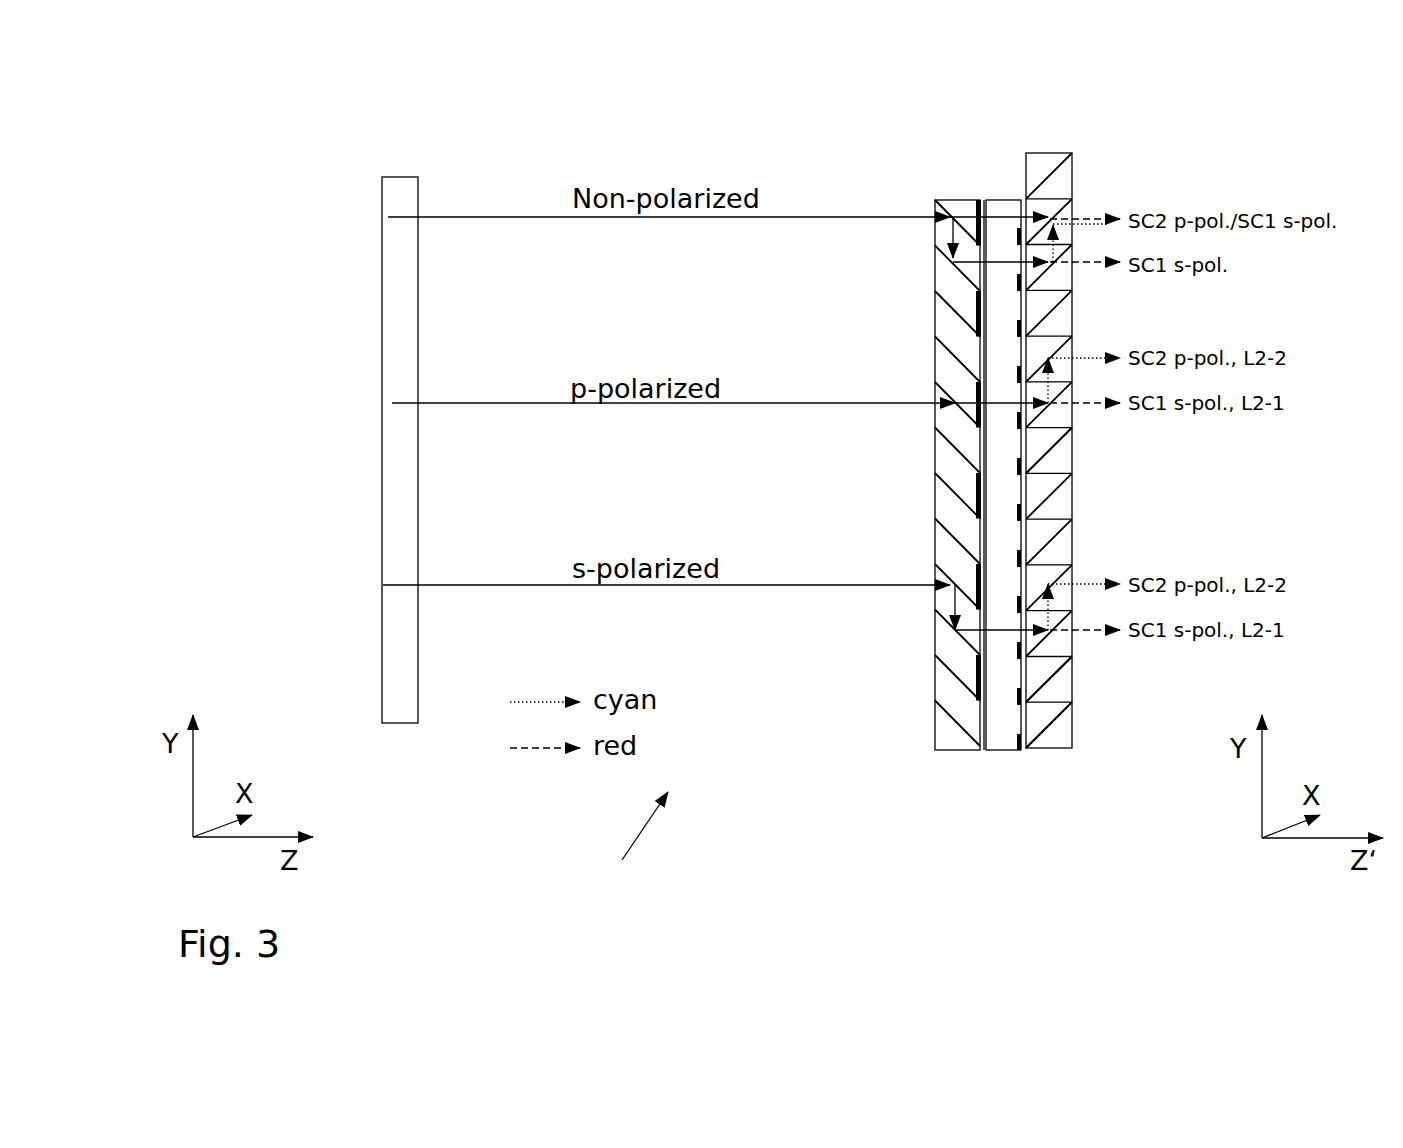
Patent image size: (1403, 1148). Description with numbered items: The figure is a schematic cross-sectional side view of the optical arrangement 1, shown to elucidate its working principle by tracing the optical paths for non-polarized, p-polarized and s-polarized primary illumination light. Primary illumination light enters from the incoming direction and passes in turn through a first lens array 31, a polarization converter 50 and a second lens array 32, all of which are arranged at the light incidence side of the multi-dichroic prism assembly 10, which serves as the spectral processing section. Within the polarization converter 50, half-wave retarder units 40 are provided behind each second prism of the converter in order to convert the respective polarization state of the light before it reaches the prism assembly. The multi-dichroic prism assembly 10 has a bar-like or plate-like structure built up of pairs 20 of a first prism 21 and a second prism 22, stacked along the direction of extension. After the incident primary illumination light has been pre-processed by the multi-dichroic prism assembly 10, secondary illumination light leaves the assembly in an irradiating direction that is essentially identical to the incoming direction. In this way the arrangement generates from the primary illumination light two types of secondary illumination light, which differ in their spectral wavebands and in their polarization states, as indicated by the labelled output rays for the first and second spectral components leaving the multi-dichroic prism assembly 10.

The optical arrangement 1 is at (628, 854).
The multi-dichroic prism assembly 10 is at (1048, 148).
The pair of prisms 20 is at (1078, 430).
The first prism 21 is at (1043, 712).
The second prism 22 is at (1058, 740).
The first lens array 31 is at (402, 190).
The second lens array 32 is at (997, 742).
The λ/2 retarder 40 is at (978, 572).
The polarization converter 50 is at (958, 200).